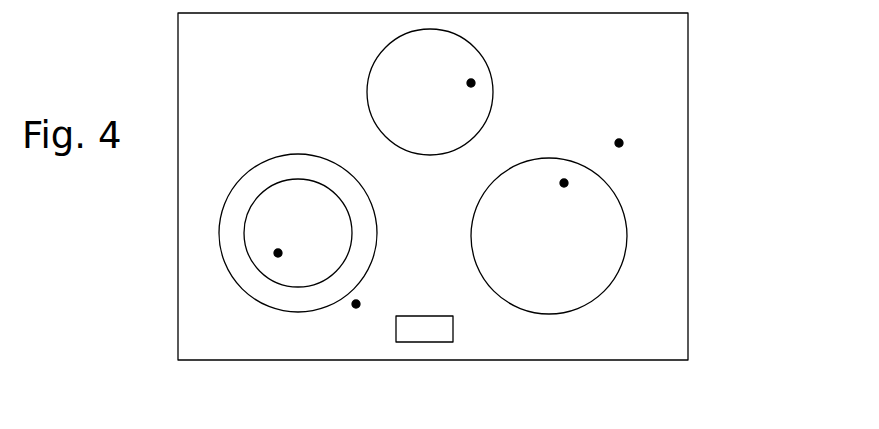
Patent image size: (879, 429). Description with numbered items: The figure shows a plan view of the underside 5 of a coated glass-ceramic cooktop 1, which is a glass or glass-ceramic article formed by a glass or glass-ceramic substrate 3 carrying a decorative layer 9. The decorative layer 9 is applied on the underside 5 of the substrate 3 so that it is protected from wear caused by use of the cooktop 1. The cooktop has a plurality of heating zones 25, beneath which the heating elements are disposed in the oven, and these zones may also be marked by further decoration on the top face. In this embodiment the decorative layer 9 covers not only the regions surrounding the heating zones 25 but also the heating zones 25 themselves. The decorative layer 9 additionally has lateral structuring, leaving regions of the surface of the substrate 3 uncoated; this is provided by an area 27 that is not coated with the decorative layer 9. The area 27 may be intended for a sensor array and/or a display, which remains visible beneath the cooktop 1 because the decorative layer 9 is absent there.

The glass or glass-ceramic article 1 is at (102, 292).
The glass or glass-ceramic substrate 3 is at (688, 63).
The underside 5 is at (356, 304).
The decorative layer 9 is at (278, 253).
The heating zones 25 is at (366, 87).
The area not coated with the decorative layer 27 is at (453, 328).